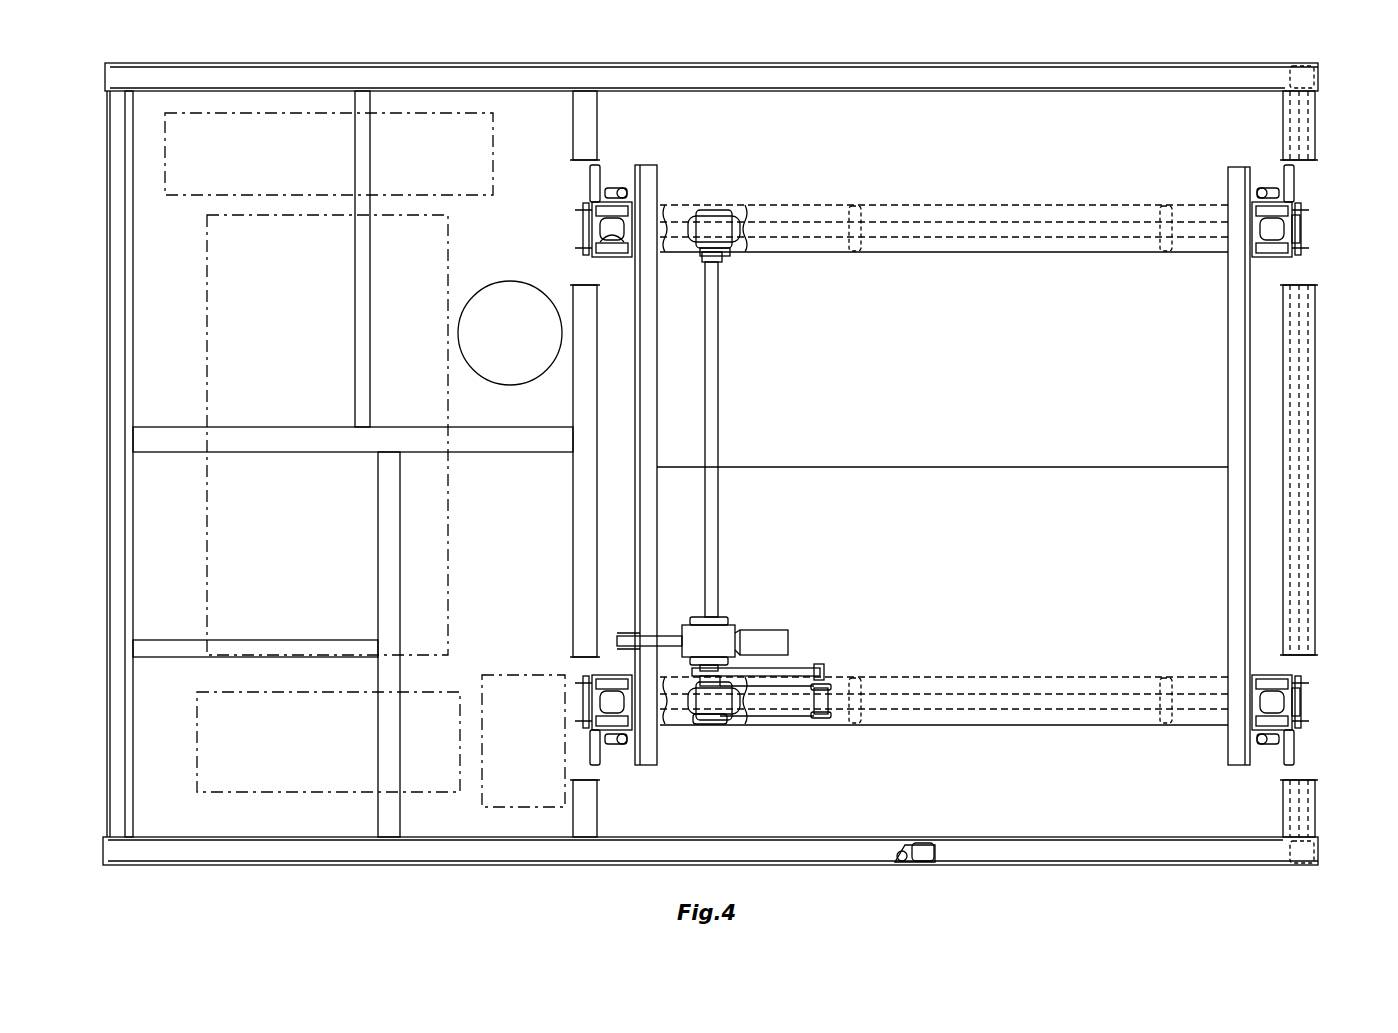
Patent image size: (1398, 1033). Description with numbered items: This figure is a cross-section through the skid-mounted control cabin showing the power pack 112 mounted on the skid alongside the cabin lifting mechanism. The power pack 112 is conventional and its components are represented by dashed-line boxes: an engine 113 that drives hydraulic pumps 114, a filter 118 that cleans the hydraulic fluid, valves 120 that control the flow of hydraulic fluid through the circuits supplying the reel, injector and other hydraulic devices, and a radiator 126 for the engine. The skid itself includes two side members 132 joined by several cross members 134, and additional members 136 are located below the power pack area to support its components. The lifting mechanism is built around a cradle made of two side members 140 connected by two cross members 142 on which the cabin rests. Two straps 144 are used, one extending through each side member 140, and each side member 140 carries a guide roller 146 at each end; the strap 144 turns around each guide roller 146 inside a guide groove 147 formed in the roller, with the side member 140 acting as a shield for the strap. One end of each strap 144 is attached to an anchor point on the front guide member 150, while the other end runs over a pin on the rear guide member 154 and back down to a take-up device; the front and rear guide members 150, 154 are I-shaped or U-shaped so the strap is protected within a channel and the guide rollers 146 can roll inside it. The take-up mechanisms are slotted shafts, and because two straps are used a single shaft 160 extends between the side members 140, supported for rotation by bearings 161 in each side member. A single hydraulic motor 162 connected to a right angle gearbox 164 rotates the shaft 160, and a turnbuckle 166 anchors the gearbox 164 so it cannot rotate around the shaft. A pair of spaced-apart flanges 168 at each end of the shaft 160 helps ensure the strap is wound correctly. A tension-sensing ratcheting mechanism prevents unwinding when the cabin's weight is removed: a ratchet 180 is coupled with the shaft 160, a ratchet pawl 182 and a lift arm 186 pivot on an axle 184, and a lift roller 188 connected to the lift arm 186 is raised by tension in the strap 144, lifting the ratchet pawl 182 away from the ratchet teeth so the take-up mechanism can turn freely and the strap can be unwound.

The power pack 112 is at (215, 888).
The engine 113 is at (448, 590).
The hydraulic pumps 114 is at (197, 745).
The filter 118 is at (490, 385).
The valves 120 is at (500, 675).
The radiator 126 is at (493, 132).
The side members 132 is at (1245, 70).
The cross members 134 is at (110, 440).
The additional members 136 is at (370, 310).
The side members 140 is at (935, 252).
The cross members 142 is at (1228, 407).
The straps 144 is at (1035, 222).
The guide roller 146 is at (600, 230).
The guide groove 147 is at (605, 240).
The front guide member 150 is at (1300, 250).
The rear guide member 154 is at (585, 205).
The shaft 160 is at (718, 500).
The bearings 161 is at (725, 262).
The hydraulic motor 162 is at (765, 630).
The right angle gearbox 164 is at (730, 617).
The turnbuckle 166 is at (665, 636).
The flanges 168 is at (710, 210).
The ratchet 180 is at (700, 700).
The ratchet pawl 182 is at (805, 668).
The axle 184 is at (824, 670).
The lift arm 186 is at (845, 725).
The lift roller 188 is at (825, 716).